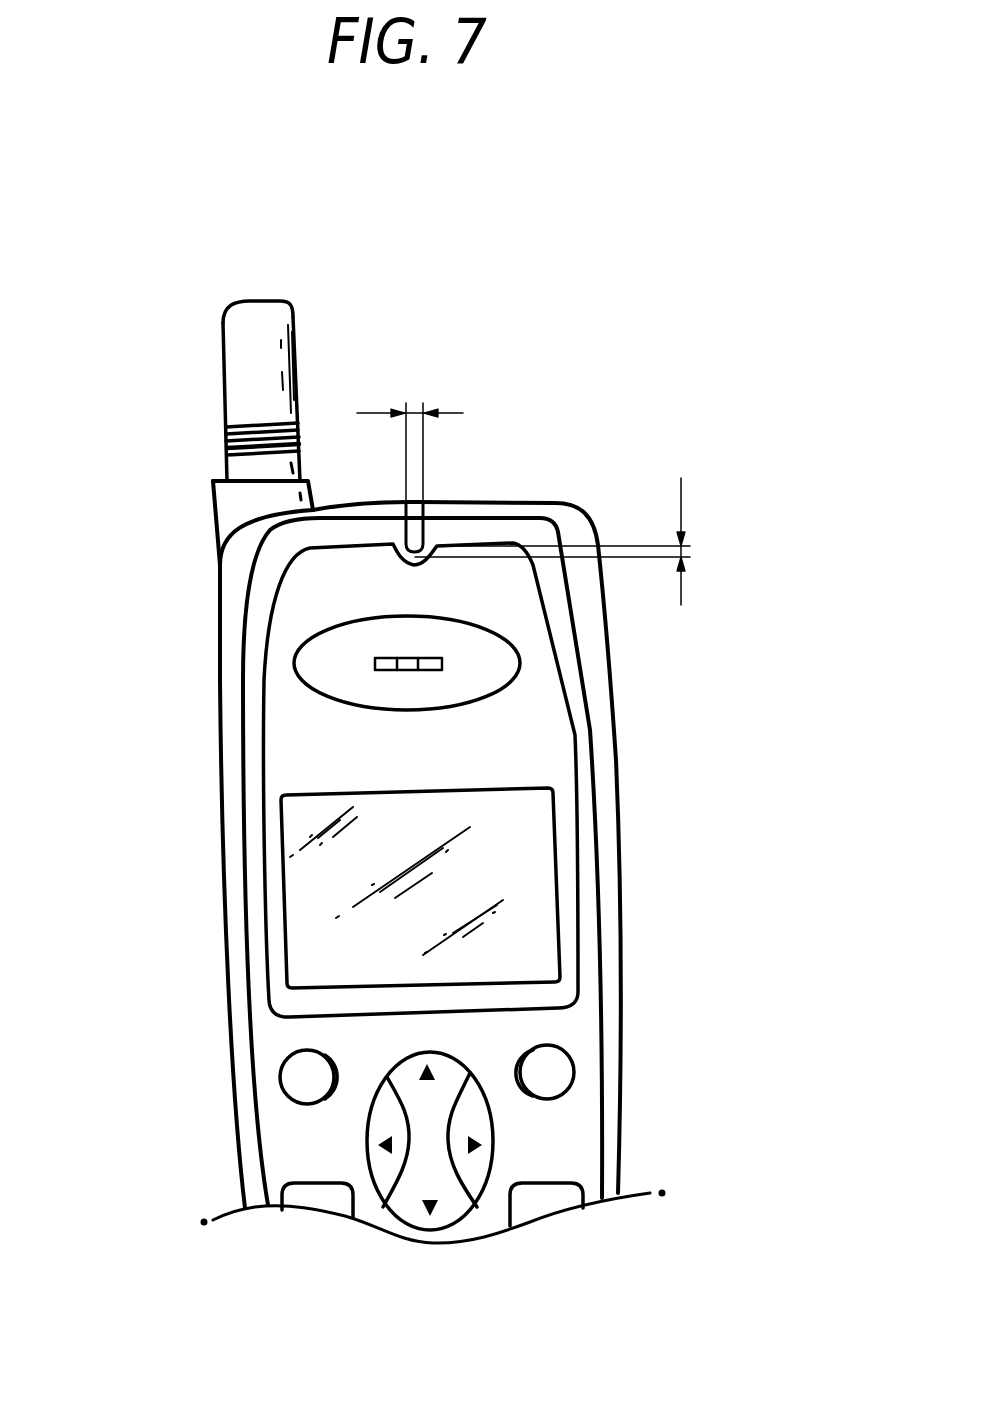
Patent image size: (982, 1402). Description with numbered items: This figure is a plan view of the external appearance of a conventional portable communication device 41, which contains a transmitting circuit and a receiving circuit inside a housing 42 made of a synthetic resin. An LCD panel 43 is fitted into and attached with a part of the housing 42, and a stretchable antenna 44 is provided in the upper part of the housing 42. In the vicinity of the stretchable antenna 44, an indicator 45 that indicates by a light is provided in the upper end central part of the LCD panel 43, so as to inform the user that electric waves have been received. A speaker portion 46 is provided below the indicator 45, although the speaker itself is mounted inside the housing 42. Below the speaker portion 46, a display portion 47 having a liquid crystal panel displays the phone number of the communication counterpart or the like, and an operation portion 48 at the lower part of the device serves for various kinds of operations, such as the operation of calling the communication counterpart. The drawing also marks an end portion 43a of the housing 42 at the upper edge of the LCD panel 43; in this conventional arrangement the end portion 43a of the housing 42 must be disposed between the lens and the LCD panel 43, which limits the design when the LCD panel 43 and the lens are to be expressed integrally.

The portable communication device 41 is at (588, 342).
The housing 42 is at (588, 585).
The LCD panel 43 is at (527, 747).
The end portion of the housing 43a is at (688, 550).
The stretchable antenna 44 is at (233, 350).
The indicator 45 is at (413, 525).
The speaker portion 46 is at (497, 663).
The display portion 47 is at (517, 885).
The operation portion 48 is at (562, 1125).